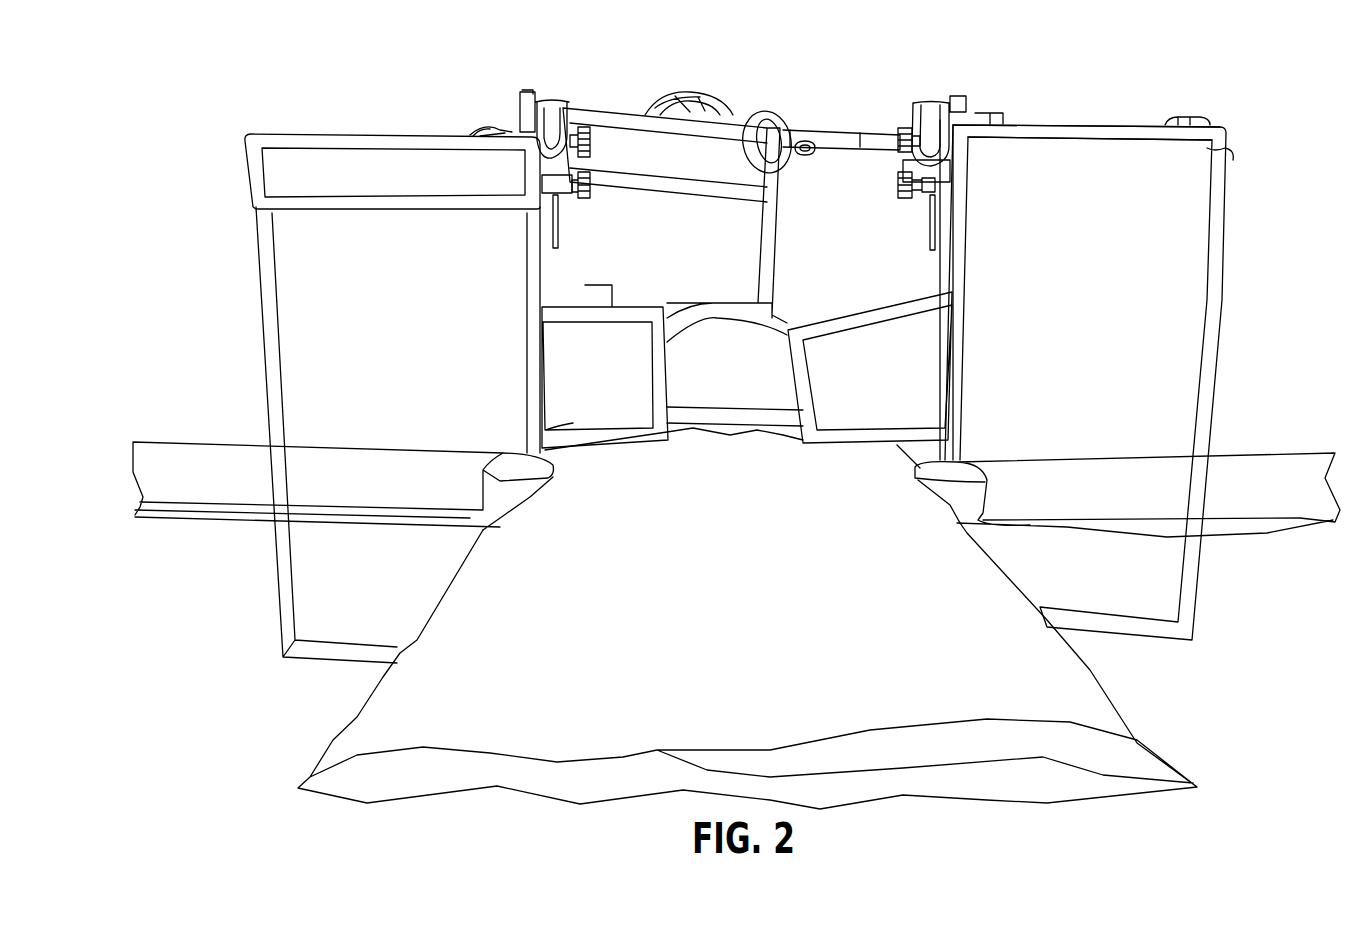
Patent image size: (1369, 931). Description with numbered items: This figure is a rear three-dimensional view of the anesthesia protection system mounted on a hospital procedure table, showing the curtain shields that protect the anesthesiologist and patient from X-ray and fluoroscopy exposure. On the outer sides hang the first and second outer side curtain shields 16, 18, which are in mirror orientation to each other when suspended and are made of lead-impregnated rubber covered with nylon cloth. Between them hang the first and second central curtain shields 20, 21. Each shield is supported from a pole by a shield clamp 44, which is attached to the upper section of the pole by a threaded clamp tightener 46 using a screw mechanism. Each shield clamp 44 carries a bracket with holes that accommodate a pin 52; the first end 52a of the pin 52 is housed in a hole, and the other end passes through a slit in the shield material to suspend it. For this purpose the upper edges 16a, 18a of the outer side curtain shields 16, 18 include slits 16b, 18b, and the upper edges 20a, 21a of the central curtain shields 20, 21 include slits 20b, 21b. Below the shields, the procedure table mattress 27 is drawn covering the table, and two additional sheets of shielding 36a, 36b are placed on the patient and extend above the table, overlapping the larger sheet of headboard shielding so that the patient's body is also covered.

The first outer side curtain shield 16 is at (1177, 277).
The upper edge of first outer side curtain shield 16a is at (1073, 135).
The slit of first outer side curtain shield 16b is at (1138, 135).
The second outer side curtain shield 18 is at (312, 288).
The upper edge of second outer side curtain shield 18a is at (347, 140).
The slit of second outer side curtain shield 18b is at (603, 173).
The first central curtain shield 20 is at (828, 193).
The upper edge of first central curtain shield 20a is at (807, 125).
The slit of first central curtain shield 20b is at (860, 133).
The second central curtain shield 21 is at (643, 210).
The upper edge of second central curtain shield 21a is at (650, 113).
The slit of second central curtain shield 21b is at (730, 120).
The procedure table mattress 27 is at (1052, 692).
The additional sheet of shielding 36a is at (895, 337).
The additional sheet of shielding 36b is at (622, 343).
The shield clamp 44 is at (562, 193).
The threaded clamp tightener 46 is at (553, 105).
The pin 52 is at (550, 222).
The first end of pin 52a is at (572, 173).